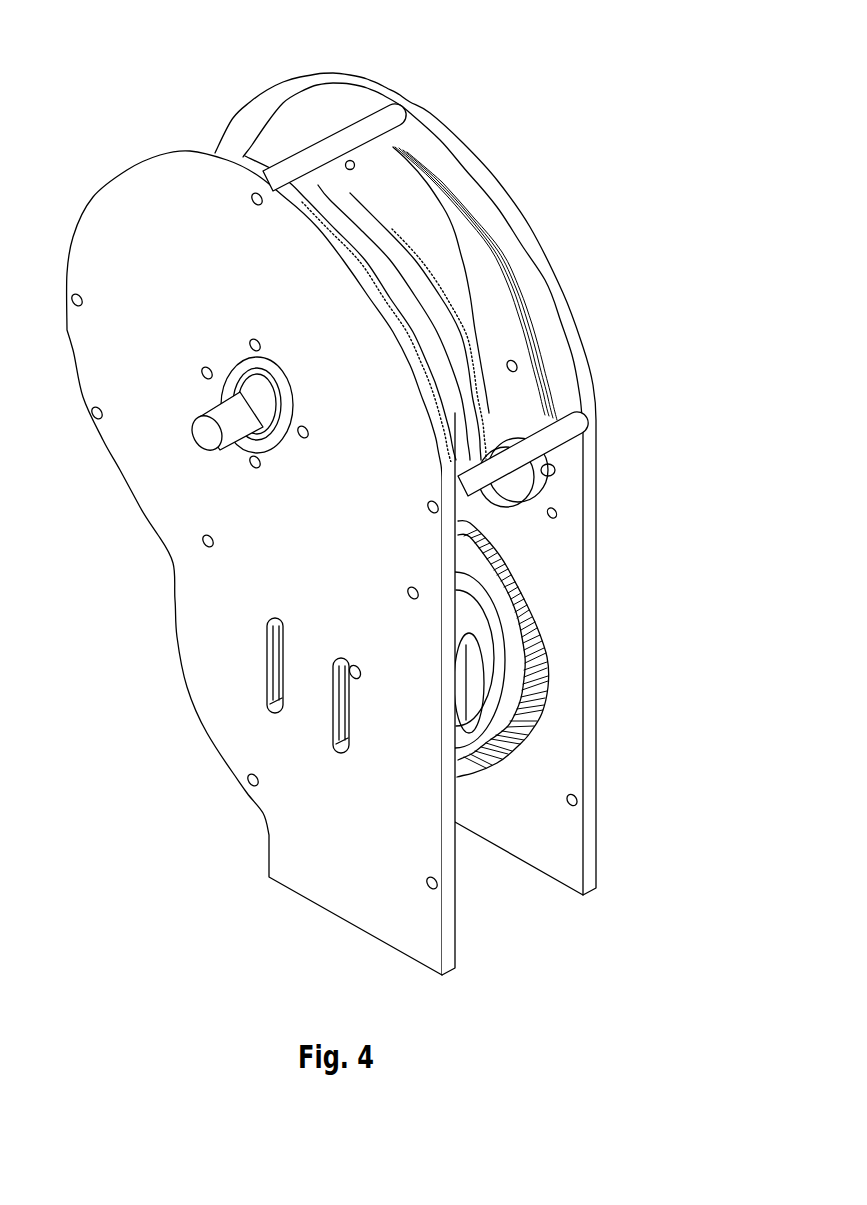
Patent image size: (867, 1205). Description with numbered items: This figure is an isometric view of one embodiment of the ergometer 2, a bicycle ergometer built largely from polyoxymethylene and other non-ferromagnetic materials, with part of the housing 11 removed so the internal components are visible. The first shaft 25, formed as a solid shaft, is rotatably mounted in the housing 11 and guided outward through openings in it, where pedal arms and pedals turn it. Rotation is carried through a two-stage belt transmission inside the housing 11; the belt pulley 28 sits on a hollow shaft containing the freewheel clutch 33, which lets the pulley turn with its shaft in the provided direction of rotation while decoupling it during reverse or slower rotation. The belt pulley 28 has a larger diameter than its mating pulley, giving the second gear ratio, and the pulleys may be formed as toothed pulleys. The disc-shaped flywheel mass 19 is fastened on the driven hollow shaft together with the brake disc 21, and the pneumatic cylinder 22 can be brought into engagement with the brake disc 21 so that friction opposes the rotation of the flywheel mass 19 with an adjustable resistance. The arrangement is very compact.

The ergometer 2 is at (369, 505).
The housing 11 is at (233, 598).
The flywheel mass 19 is at (460, 355).
The brake disc 21 is at (487, 271).
The pneumatic cylinder 22 is at (552, 473).
The first shaft 25 is at (203, 430).
The belt pulley 28 is at (547, 658).
The freewheel clutch 33 is at (473, 673).